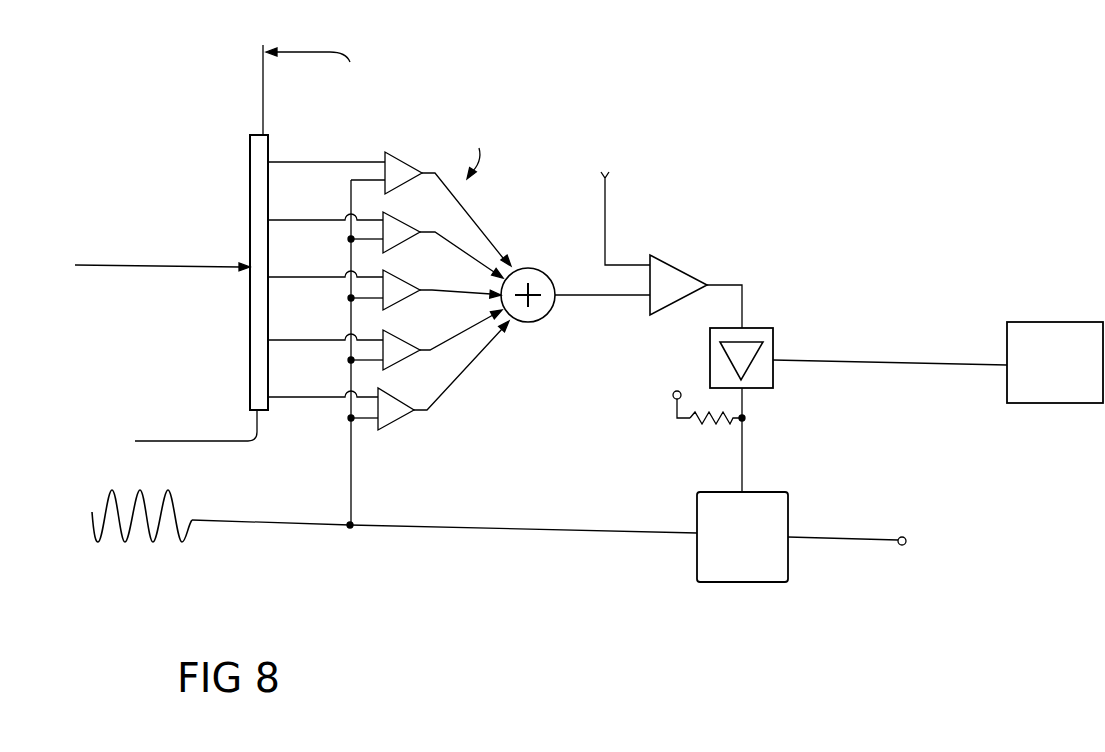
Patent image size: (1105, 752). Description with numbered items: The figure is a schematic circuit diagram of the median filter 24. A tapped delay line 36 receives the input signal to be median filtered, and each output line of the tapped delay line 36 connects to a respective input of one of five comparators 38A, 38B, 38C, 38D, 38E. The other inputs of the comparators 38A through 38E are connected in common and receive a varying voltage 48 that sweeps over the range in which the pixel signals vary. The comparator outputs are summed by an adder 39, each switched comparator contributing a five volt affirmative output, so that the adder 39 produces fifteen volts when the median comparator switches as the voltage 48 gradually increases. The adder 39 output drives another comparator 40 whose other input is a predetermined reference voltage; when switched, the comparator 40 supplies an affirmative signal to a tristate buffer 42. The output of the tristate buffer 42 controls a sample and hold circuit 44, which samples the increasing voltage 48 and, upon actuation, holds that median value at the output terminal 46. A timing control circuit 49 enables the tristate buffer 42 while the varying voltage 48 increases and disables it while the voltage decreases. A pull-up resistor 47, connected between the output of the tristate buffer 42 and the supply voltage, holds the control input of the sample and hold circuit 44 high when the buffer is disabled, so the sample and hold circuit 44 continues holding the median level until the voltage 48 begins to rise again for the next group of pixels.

The median filter 24 is at (615, 70).
The tapped delay line 36 is at (250, 152).
The comparator 38A is at (384, 152).
The comparator 38B is at (386, 213).
The comparator 38C is at (397, 272).
The comparator 38D is at (397, 335).
The comparator 38E is at (390, 422).
The adder 39 is at (526, 268).
The comparator 40 is at (678, 301).
The tristate buffer 42 is at (752, 328).
The sample and hold circuit 44 is at (790, 508).
The output terminal 46 is at (906, 539).
The pull-up resistor 47 is at (718, 428).
The varying voltage 48 is at (205, 520).
The timing control circuit 49 is at (1052, 322).